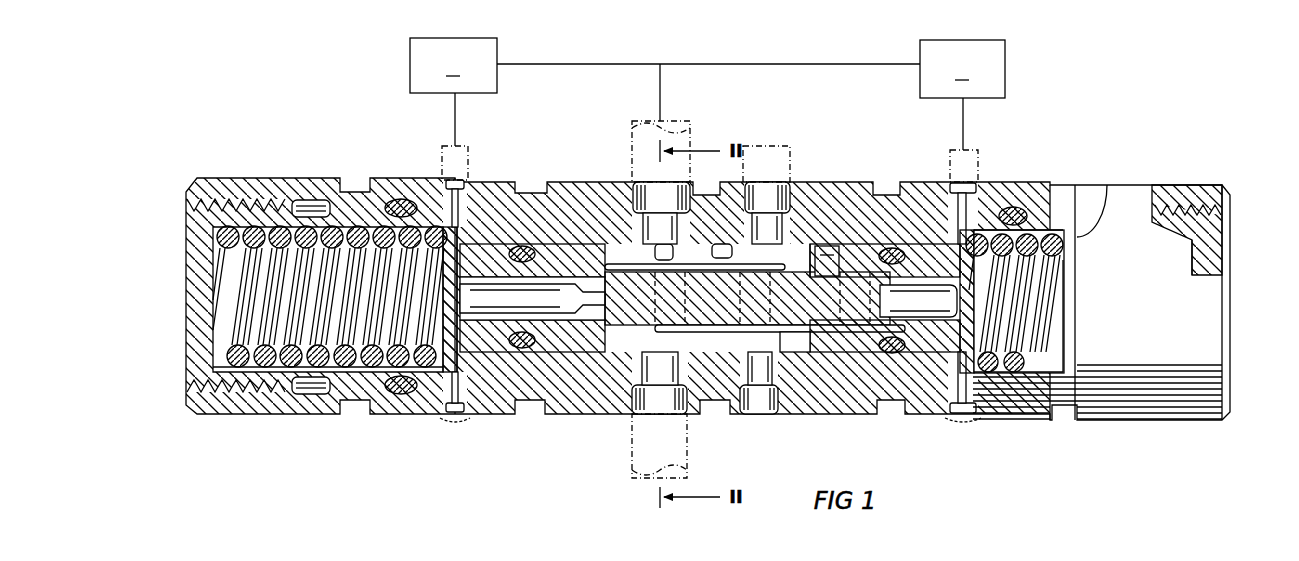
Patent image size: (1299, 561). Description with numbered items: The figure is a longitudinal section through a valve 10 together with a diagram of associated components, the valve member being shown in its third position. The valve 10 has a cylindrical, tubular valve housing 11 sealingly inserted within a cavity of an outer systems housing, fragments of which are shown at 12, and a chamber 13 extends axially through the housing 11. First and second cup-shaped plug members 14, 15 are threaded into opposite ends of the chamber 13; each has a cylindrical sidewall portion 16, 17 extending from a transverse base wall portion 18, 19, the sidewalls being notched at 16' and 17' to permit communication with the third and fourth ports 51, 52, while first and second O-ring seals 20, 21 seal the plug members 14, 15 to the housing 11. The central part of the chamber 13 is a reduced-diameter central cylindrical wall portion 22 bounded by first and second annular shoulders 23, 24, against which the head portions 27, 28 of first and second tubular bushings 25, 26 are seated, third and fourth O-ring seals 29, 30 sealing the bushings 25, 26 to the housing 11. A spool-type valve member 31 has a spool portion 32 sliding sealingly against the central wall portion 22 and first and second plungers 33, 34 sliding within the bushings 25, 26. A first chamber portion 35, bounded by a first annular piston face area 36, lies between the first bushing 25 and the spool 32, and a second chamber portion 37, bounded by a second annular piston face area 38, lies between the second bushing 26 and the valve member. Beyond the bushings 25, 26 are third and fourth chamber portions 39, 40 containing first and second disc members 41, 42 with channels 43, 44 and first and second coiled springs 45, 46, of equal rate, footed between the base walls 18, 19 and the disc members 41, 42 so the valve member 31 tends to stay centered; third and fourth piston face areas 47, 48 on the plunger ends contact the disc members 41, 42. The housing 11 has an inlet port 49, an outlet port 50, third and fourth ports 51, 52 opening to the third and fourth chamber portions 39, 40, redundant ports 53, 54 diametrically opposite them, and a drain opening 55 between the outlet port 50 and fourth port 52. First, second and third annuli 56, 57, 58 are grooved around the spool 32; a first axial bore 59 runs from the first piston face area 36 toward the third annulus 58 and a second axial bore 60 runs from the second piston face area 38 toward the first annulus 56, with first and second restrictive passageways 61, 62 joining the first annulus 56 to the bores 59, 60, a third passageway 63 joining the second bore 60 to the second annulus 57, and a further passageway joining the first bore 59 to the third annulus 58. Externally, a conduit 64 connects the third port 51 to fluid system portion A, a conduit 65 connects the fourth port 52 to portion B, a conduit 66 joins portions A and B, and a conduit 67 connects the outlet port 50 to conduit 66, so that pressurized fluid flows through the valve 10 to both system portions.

The valve 10 is at (1062, 465).
The valve housing 11 is at (605, 424).
The outer systems housing 12 is at (448, 400).
The chamber 13 is at (829, 343).
The first plug member 14 is at (184, 247).
The second plug member 15 is at (1236, 228).
The sidewall portion of first plug member 16 is at (311, 179).
The notch in first plug sidewall 16' is at (411, 270).
The sidewall portion of second plug member 17 is at (1026, 194).
The notch in second plug sidewall 17' is at (1002, 176).
The base wall portion of first plug member 18 is at (186, 323).
The base wall portion of second plug member 19 is at (1232, 253).
The first O-ring seal 20 is at (400, 200).
The second O-ring seal 21 is at (1018, 205).
The central cylindrical wall portion 22 is at (568, 400).
The first annular shoulder 23 is at (471, 210).
The second annular shoulder 24 is at (952, 379).
The first tubular bushing 25 is at (545, 360).
The second tubular bushing 26 is at (882, 414).
The head portion of first bushing 27 is at (461, 385).
The head portion of second bushing 28 is at (956, 416).
The third O-ring seal 29 is at (522, 245).
The fourth O-ring seal 30 is at (896, 244).
The valve member 31 is at (809, 244).
The spool portion 32 is at (715, 416).
The first plunger 33 is at (560, 228).
The second plunger 34 is at (937, 244).
The first chamber portion 35 is at (607, 248).
The first annular piston face area 36 is at (590, 352).
The second chamber portion 37 is at (826, 265).
The second annular piston face area 38 is at (826, 414).
The third chamber portion 39 is at (357, 228).
The fourth chamber portion 40 is at (1100, 195).
The first disc member 41 is at (411, 392).
The second disc member 42 is at (988, 378).
The channel of first disc member 43 is at (532, 241).
The channel of second disc member 44 is at (1063, 299).
The first coiled spring 45 is at (349, 402).
The second coiled spring 46 is at (1062, 268).
The third piston face area 47 is at (532, 352).
The fourth piston face area 48 is at (1060, 345).
The inlet port 49 is at (659, 415).
The outlet port 50 is at (661, 154).
The third port 51 is at (454, 182).
The fourth port 52 is at (971, 200).
The redundant port 53 is at (452, 418).
The redundant port 54 is at (966, 418).
The drain opening 55 is at (759, 185).
The first annulus 56 is at (665, 248).
The second annulus 57 is at (721, 244).
The third annulus 58 is at (792, 228).
The first axial bore 59 is at (747, 298).
The second axial bore 60 is at (813, 338).
The first restrictive passageway 61 is at (645, 264).
The second restrictive passageway 62 is at (653, 339).
The third passageway 63 is at (759, 397).
The conduit 64 is at (803, 262).
The conduit 65 is at (962, 116).
The conduit 66 is at (845, 64).
The conduit 67 is at (660, 86).